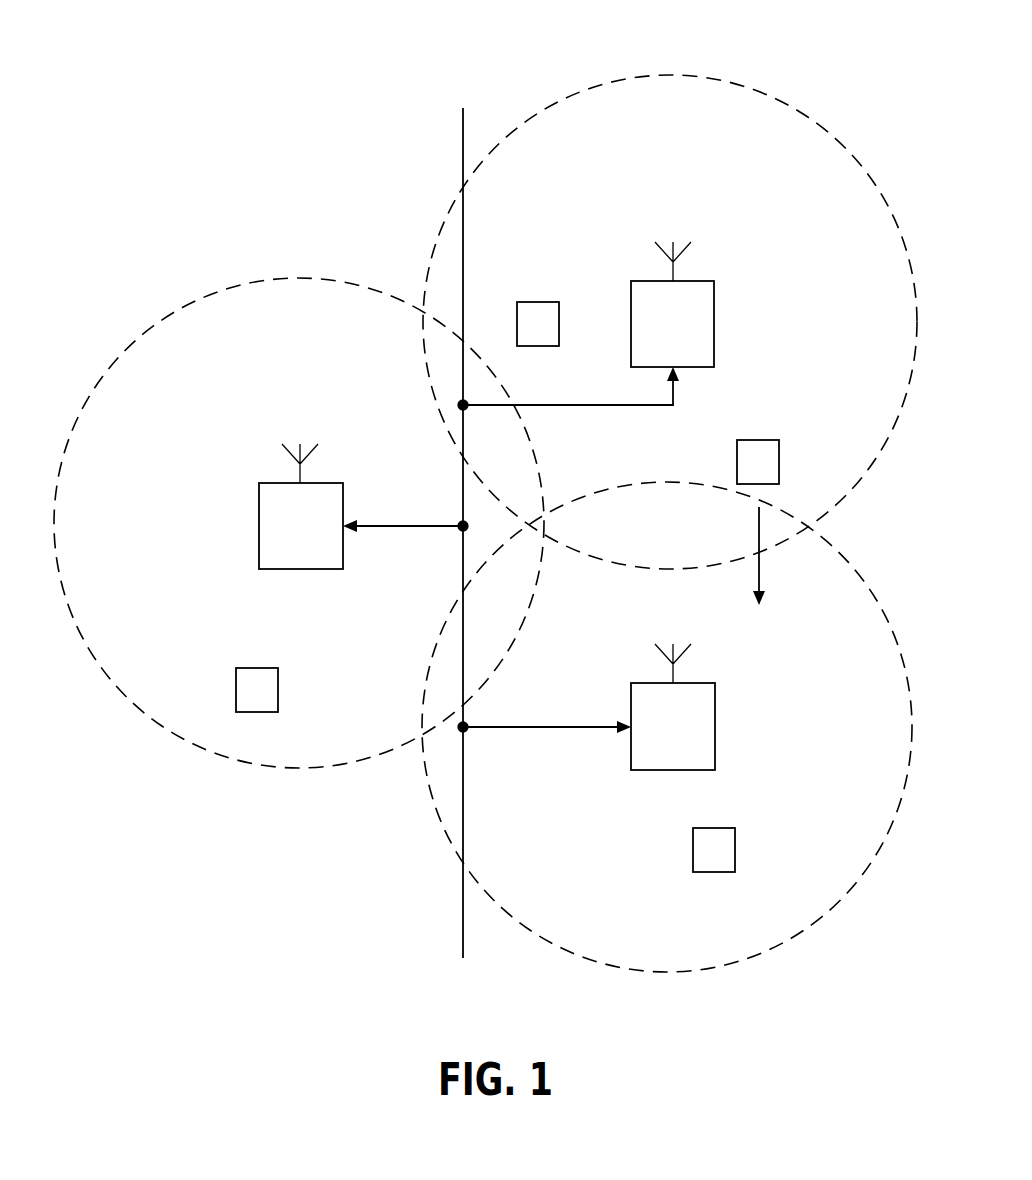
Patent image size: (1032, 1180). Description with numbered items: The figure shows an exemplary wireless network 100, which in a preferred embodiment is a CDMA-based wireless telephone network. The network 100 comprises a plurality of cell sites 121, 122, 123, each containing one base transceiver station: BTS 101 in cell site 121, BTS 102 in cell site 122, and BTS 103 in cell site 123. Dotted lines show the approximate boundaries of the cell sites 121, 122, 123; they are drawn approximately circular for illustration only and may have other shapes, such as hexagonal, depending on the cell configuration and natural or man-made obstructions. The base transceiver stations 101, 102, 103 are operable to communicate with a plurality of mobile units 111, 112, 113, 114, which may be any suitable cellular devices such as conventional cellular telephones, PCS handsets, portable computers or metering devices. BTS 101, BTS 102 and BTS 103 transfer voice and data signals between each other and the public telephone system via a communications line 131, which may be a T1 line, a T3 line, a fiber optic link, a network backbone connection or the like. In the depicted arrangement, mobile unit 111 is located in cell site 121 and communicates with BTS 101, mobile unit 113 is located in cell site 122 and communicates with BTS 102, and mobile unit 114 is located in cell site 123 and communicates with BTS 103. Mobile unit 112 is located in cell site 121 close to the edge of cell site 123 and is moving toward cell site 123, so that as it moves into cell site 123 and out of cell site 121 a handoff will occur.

The wireless network 100 is at (255, 132).
The base transceiver station 101 is at (715, 322).
The base transceiver station 102 is at (259, 524).
The base transceiver station 103 is at (715, 727).
The mobile unit 111 is at (539, 302).
The mobile unit 112 is at (757, 440).
The mobile unit 113 is at (257, 668).
The mobile unit 114 is at (736, 850).
The cell site 121 is at (652, 75).
The cell site 122 is at (287, 278).
The cell site 123 is at (866, 583).
The communications line 131 is at (463, 150).